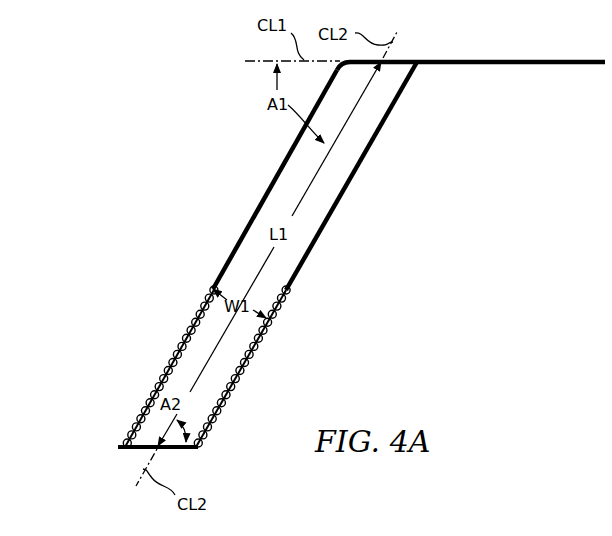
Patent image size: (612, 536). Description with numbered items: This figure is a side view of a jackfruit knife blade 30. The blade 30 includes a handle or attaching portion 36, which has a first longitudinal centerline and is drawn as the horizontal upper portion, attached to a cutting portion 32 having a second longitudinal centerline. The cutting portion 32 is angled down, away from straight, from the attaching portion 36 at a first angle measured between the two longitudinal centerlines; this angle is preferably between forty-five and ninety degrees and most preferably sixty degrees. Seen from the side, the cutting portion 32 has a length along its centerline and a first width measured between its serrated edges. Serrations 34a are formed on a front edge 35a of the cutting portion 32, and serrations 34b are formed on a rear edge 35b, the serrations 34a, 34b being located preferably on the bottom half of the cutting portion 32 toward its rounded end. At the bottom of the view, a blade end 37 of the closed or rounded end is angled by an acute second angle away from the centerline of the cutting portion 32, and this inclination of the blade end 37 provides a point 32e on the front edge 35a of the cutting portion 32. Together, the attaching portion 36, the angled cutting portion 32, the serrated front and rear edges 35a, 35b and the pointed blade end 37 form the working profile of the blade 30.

The jackfruit knife blade 30 is at (208, 81).
The cutting portion 32 is at (297, 273).
The point 32e is at (120, 446).
The serrations 34a is at (177, 348).
The serrations 34b is at (251, 363).
The front edge 35a is at (263, 200).
The rear edge 35b is at (340, 200).
The handle or attaching portion 36 is at (493, 65).
The blade end 37 is at (135, 455).